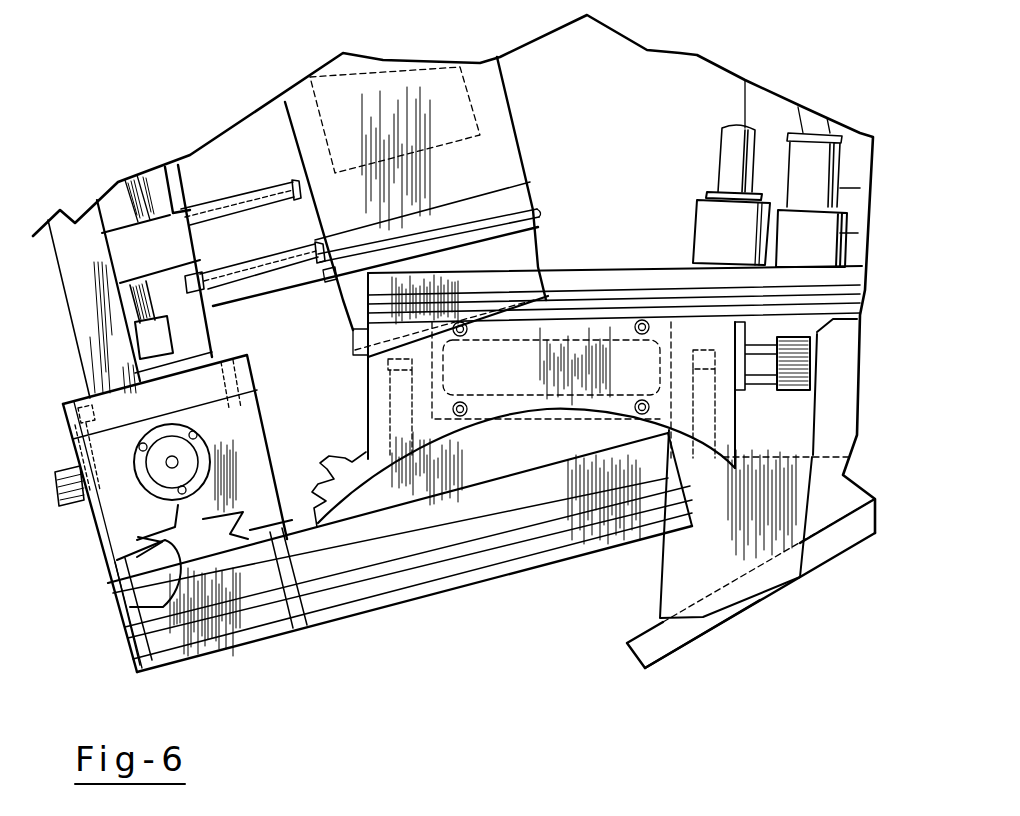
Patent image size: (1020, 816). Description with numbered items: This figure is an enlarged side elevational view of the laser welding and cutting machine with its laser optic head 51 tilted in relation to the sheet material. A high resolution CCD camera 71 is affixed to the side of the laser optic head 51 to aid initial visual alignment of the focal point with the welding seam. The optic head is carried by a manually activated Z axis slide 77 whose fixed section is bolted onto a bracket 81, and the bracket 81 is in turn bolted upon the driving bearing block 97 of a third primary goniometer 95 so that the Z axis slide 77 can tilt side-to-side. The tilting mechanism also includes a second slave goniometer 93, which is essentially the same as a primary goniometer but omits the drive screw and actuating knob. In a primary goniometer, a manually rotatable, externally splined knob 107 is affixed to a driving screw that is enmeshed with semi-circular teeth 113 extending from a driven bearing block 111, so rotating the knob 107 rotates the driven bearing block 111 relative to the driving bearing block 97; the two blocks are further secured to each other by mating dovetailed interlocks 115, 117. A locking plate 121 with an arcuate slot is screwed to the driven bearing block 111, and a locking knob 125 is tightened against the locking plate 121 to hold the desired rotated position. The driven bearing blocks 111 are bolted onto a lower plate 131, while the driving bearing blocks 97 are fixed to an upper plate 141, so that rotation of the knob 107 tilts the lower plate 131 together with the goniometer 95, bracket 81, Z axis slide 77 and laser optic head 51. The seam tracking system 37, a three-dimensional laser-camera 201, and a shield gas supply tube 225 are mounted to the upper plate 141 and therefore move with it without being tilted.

The seam tracking system 37 is at (733, 630).
The laser optic head 51 is at (483, 88).
The CCD camera 71 is at (373, 68).
The Z axis slide 77 is at (147, 195).
The bracket 81 is at (73, 258).
The second slave goniometer 93 is at (540, 435).
The third primary goniometer 95 is at (277, 472).
The driving bearing block 97 is at (727, 420).
The knob 107 is at (793, 364).
The driven bearing block 111 is at (473, 462).
The teeth 113 is at (343, 432).
The dovetailed interlock 115 is at (140, 615).
The dovetailed interlock 117 is at (137, 565).
The locking plate 121 is at (83, 515).
The locking knob 125 is at (57, 469).
The lower plate 131 is at (330, 565).
The upper plate 141 is at (735, 283).
The laser-camera 201 is at (713, 523).
The shield gas supply tube 225 is at (633, 661).